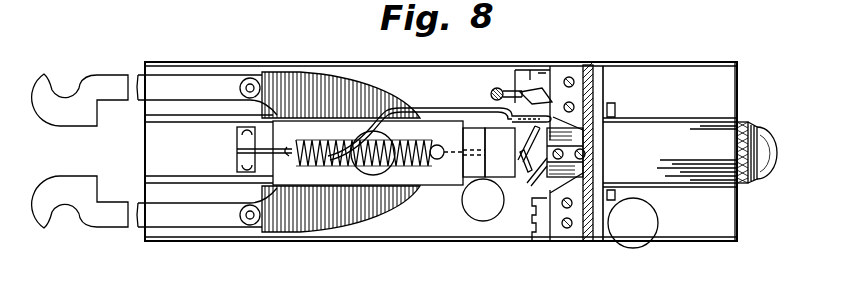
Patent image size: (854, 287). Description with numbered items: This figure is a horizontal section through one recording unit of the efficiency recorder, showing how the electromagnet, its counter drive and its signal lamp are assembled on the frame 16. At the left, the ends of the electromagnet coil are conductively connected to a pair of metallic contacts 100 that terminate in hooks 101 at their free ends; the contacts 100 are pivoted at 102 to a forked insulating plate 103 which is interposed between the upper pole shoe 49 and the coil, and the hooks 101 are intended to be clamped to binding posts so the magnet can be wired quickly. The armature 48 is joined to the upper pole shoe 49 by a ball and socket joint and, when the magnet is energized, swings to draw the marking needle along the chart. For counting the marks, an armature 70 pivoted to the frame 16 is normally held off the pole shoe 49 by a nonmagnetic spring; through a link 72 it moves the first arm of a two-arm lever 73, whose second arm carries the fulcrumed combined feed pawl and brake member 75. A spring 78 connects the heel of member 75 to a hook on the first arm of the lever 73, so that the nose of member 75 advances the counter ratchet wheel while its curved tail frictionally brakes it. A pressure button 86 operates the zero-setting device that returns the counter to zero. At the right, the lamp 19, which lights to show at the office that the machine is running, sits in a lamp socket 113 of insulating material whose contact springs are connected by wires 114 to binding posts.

The frame 16 is at (496, 63).
The lamp 19 is at (770, 143).
The armature 48 is at (475, 173).
The upper pole shoe 49 is at (394, 155).
The armature 70 is at (236, 144).
The link 72 is at (427, 113).
The two-arm lever 73 is at (570, 105).
The combined feed pawl and brake member 75 is at (550, 93).
The spring 78 is at (491, 90).
The pressure button 86 is at (650, 222).
The metallic contacts 100 is at (207, 151).
The hooks 101 is at (50, 105).
The pivot 102 is at (252, 79).
The forked insulating plate 103 is at (322, 90).
The lamp socket 113 is at (565, 140).
The wires 114 is at (540, 132).